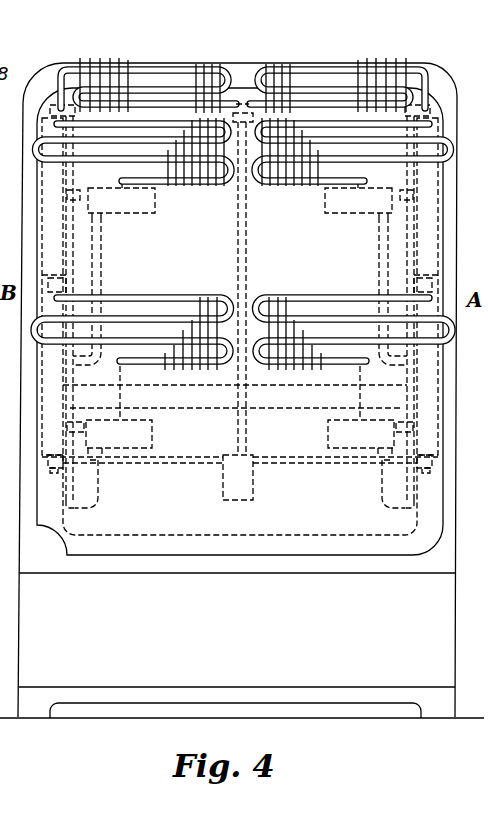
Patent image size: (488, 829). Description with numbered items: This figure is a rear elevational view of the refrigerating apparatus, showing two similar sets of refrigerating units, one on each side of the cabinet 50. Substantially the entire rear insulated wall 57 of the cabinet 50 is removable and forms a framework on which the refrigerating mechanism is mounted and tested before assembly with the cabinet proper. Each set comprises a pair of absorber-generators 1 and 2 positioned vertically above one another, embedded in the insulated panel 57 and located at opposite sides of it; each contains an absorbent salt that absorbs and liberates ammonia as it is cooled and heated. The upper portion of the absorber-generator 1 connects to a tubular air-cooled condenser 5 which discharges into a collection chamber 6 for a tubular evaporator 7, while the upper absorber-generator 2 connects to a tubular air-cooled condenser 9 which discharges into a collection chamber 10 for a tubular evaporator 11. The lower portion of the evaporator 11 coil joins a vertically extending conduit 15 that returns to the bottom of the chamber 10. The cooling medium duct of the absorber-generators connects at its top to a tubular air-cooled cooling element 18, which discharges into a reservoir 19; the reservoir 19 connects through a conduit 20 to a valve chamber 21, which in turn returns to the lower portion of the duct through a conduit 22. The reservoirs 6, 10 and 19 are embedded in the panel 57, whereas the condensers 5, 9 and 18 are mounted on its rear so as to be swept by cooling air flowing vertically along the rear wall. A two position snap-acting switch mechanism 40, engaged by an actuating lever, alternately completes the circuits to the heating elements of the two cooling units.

The absorber-generator 1 is at (241, 394).
The absorber-generator 2 is at (240, 280).
The tubular air cooled condenser 5 is at (121, 299).
The collection chamber 6 is at (240, 411).
The tubular evaporator 7 is at (70, 490).
The tubular air-cooled condenser 9 is at (109, 168).
The collection chamber 10 is at (240, 200).
The tubular evaporator 11 is at (74, 262).
The vertically extending conduit 15 is at (102, 257).
The tubular air-cooled cooling element 18 is at (150, 66).
The reservoir 19 is at (245, 135).
The conduit 20 is at (247, 244).
The valve chamber 21 is at (238, 477).
The conduit 22 is at (172, 456).
The two position snap-acting switch mechanism 40 is at (238, 477).
The cabinet 50 is at (457, 468).
The rear insulated wall 57 is at (240, 495).